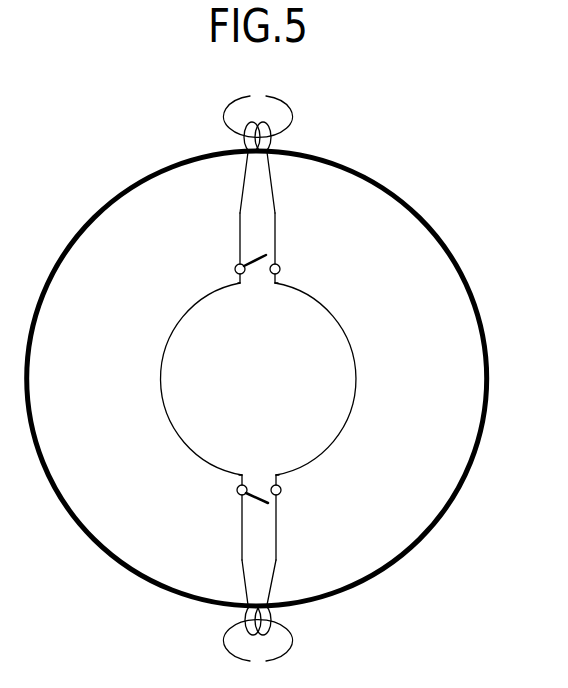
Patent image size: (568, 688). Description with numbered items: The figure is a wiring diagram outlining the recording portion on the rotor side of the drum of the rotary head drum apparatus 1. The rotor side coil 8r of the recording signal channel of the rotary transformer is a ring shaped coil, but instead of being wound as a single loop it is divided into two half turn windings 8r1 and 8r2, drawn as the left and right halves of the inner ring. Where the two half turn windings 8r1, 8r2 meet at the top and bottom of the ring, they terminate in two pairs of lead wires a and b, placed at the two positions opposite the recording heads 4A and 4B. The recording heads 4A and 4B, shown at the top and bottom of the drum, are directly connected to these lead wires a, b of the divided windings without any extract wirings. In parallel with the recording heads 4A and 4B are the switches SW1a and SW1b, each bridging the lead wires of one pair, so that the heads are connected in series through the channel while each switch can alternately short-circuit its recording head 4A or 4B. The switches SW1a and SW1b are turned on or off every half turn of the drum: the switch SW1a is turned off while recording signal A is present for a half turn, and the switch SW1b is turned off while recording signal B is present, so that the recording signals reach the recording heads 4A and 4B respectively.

The rotary head drum apparatus 1 is at (405, 196).
The recording head 4A is at (292, 117).
The recording head 4B is at (293, 640).
The rotor side coil 8r is at (243, 326).
The half turn winding 8r1 is at (158, 381).
The half turn winding 8r2 is at (357, 378).
The switch SW1a is at (215, 248).
The switch SW1b is at (299, 517).
The lead wire a is at (238, 281).
The lead wire b is at (239, 476).